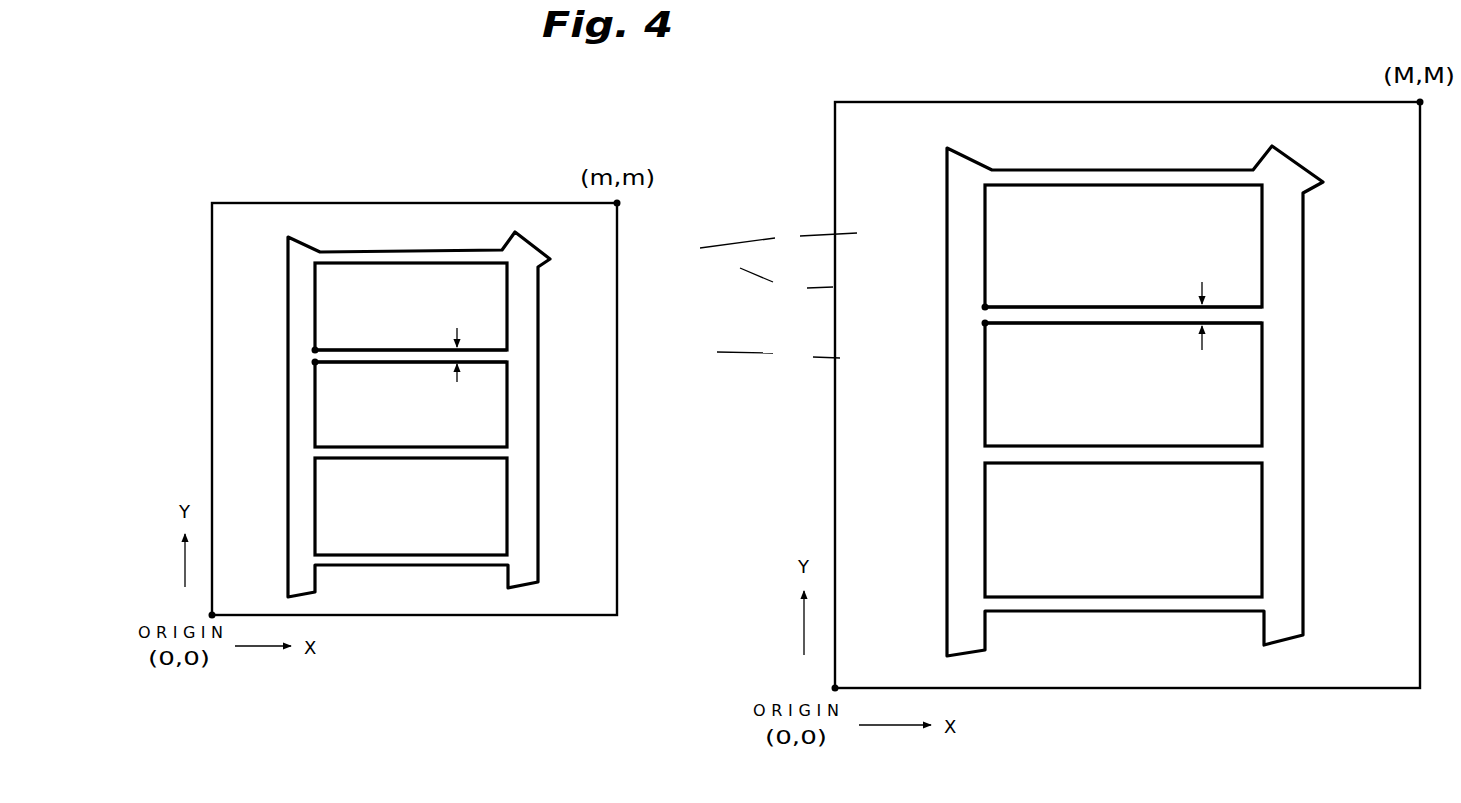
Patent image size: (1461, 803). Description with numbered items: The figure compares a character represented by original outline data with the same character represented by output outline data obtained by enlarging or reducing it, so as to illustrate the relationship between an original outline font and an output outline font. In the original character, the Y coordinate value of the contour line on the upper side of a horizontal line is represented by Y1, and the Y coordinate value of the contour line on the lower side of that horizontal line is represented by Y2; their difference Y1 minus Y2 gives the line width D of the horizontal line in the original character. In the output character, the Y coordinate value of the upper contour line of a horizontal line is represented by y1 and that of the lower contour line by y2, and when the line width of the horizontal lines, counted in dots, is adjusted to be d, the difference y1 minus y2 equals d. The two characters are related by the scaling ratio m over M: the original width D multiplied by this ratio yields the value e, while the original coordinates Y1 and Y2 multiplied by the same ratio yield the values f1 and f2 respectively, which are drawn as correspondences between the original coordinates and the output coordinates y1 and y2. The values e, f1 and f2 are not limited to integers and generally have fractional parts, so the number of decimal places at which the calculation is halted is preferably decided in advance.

The Y coordinate value of upper contour line y1 is at (543, 305).
The Y coordinate value of lower contour line y2 is at (543, 371).
The line width of horizontal lines d is at (612, 310).
The Y coordinate value of upper-side contour line Y1 is at (1034, 294).
The Y coordinate value of lower-side contour line Y2 is at (1037, 340).
The horizontal line width of original character D is at (1002, 291).
The scaled line width value e is at (778, 236).
The scaled upper coordinate value f1 is at (786, 283).
The scaled lower coordinate value f2 is at (778, 354).